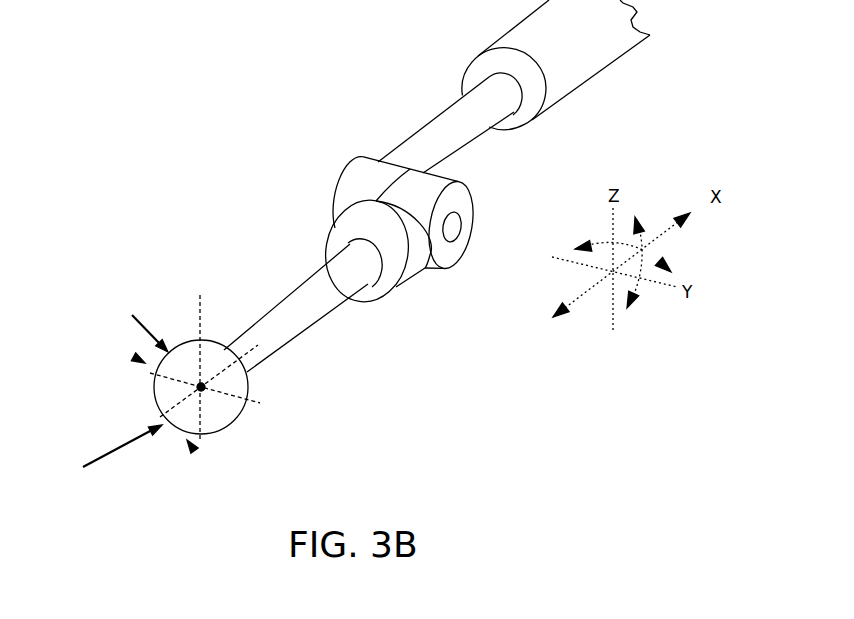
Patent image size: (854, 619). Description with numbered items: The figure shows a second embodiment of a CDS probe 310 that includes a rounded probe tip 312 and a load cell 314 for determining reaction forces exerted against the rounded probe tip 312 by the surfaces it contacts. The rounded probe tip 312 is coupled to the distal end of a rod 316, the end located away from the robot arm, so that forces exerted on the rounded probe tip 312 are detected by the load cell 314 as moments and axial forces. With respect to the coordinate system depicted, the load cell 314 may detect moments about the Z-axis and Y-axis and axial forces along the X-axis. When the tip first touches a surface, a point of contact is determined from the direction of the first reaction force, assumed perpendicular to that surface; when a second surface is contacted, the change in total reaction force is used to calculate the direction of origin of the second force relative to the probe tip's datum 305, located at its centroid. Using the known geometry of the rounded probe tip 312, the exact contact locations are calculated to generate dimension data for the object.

The probe tip datum 305 is at (205, 386).
The CDS probe 310 is at (188, 94).
The rounded probe tip 312 is at (227, 428).
The load cell 314 is at (332, 224).
The rod 316 is at (306, 328).